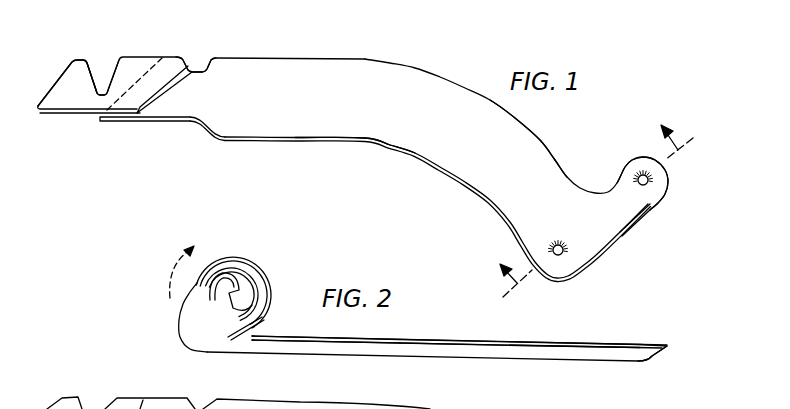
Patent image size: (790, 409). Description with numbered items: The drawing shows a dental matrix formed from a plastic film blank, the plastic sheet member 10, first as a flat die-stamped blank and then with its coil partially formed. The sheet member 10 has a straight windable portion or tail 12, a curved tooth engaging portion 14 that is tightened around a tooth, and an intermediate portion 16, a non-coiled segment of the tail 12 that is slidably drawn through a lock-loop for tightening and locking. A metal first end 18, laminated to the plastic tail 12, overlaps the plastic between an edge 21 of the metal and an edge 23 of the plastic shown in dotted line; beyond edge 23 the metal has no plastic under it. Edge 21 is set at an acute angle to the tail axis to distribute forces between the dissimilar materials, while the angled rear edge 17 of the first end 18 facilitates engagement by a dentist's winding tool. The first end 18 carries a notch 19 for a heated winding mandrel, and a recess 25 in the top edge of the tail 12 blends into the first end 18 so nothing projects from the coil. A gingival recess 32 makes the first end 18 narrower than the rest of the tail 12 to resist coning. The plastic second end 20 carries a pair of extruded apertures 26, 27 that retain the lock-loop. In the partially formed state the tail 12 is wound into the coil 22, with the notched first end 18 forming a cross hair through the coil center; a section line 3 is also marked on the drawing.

In FIG. 1, the plastic sheet member 10 is at (265, 61).
In FIG. 2, the plastic sheet member 10 is at (475, 338).
In FIG. 1, the tail 12 is at (231, 118).
In FIG. 2, the tail 12 is at (323, 348).
In FIG. 1, the curved tooth engaging portion 14 is at (527, 168).
In FIG. 2, the curved tooth engaging portion 14 is at (560, 356).
In FIG. 1, the intermediate portion 16 is at (351, 118).
In FIG. 2, the intermediate portion 16 is at (462, 348).
In FIG. 1, the rear edge 17 is at (60, 69).
In FIG. 2, the rear edge 17 is at (206, 302).
In FIG. 1, the first end 18 is at (64, 102).
In FIG. 2, the first end 18 is at (258, 326).
In FIG. 1, the notch 19 is at (98, 93).
In FIG. 2, the notch 19 is at (248, 275).
In FIG. 1, the second end 20 is at (627, 246).
In FIG. 2, the second end 20 is at (643, 348).
In FIG. 1, the edge of the metal material 21 is at (155, 100).
In FIG. 2, the edge of the metal material 21 is at (253, 258).
In FIG. 2, the coil 22 is at (269, 268).
In FIG. 1, the edge of the plastic material 23 is at (145, 73).
In FIG. 1, the recess 25 is at (197, 70).
In FIG. 1, the extruded aperture 26 is at (570, 251).
In FIG. 1, the extruded aperture 27 is at (640, 194).
In FIG. 1, the gingival recess 32 is at (174, 119).
In FIG. 1, the section line 3- 3 is at (589, 199).